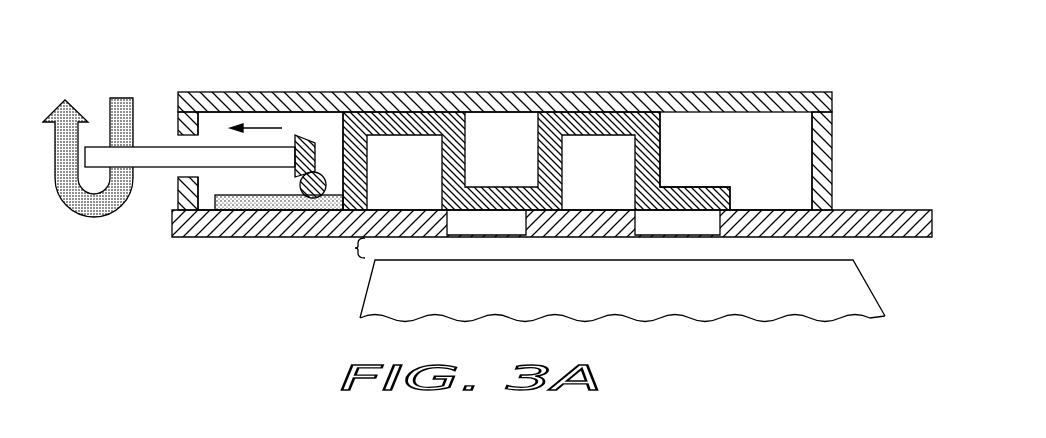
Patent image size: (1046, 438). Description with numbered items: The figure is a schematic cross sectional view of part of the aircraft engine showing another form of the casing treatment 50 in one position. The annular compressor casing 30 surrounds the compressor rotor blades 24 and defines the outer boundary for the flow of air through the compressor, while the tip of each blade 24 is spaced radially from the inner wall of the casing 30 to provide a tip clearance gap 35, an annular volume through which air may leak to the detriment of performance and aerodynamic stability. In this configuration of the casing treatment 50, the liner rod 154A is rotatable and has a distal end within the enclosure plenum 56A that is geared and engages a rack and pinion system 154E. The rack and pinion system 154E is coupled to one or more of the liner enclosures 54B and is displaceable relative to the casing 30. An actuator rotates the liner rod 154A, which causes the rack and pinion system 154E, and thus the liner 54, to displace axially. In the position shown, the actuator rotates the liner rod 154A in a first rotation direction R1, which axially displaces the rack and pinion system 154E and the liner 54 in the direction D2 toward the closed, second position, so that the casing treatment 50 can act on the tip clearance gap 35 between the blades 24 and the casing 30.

The first rotation direction R1 is at (88, 145).
The liner rod 154A is at (152, 155).
The casing treatment 50 is at (843, 80).
The liner enclosure 54B is at (408, 120).
The liner 54 is at (665, 133).
The enclosure plenum 56A is at (327, 128).
The direction D2 is at (262, 127).
The rack and pinion system 154E is at (216, 205).
The annular compressor casing 30 is at (932, 205).
The tip clearance gap 35 is at (346, 251).
The compressor rotor blade 24 is at (663, 285).